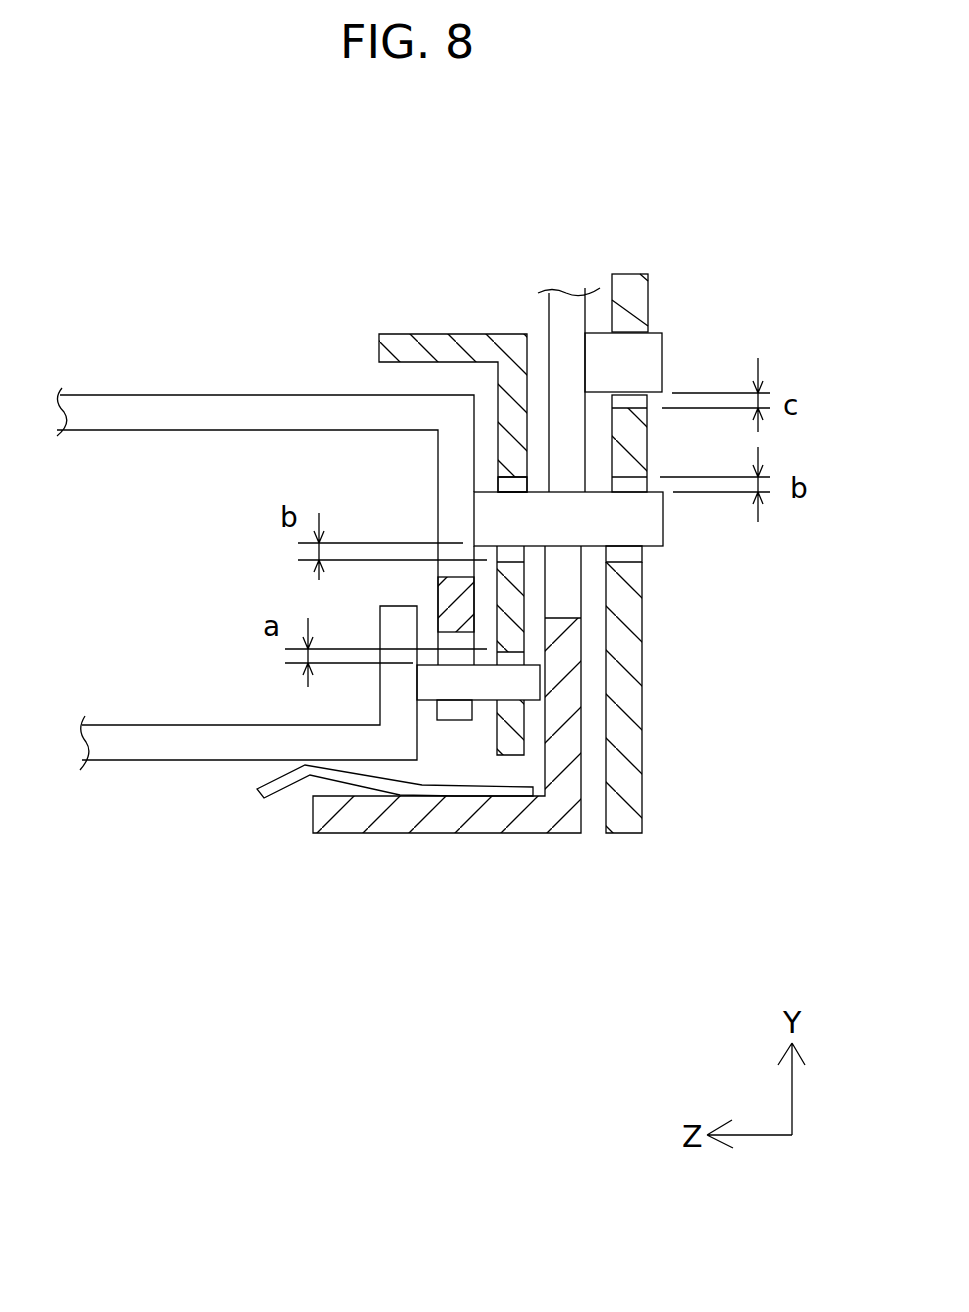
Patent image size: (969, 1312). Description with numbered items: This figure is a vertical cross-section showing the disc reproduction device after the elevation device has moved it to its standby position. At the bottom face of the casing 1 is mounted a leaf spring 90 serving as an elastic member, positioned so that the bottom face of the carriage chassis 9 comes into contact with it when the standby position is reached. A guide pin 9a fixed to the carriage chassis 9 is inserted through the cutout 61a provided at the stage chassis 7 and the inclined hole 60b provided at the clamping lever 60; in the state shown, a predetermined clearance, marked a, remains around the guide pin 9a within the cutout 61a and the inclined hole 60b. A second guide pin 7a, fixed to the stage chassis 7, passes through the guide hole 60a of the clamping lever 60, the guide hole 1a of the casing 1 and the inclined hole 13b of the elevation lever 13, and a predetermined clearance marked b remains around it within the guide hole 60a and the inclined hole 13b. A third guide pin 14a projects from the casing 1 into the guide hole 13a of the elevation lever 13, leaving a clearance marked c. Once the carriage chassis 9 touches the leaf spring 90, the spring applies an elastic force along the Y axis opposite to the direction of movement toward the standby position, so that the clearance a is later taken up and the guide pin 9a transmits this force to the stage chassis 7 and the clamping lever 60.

The casing 1 is at (343, 833).
The guide hole 1a is at (558, 293).
The stage chassis 7 is at (147, 398).
The guide pin 7a is at (652, 522).
The carriage chassis 9 is at (115, 760).
The guide pin 9a is at (527, 682).
The elevation lever 13 is at (642, 783).
The guide hole 13a is at (624, 333).
The inclined hole 13b is at (627, 548).
The guide pin 14a is at (648, 370).
The clamping lever 60 is at (432, 334).
The guide hole 60a is at (512, 477).
The inclined hole 60b is at (530, 697).
The cutout 61a is at (453, 712).
The leaf spring 90 is at (282, 793).